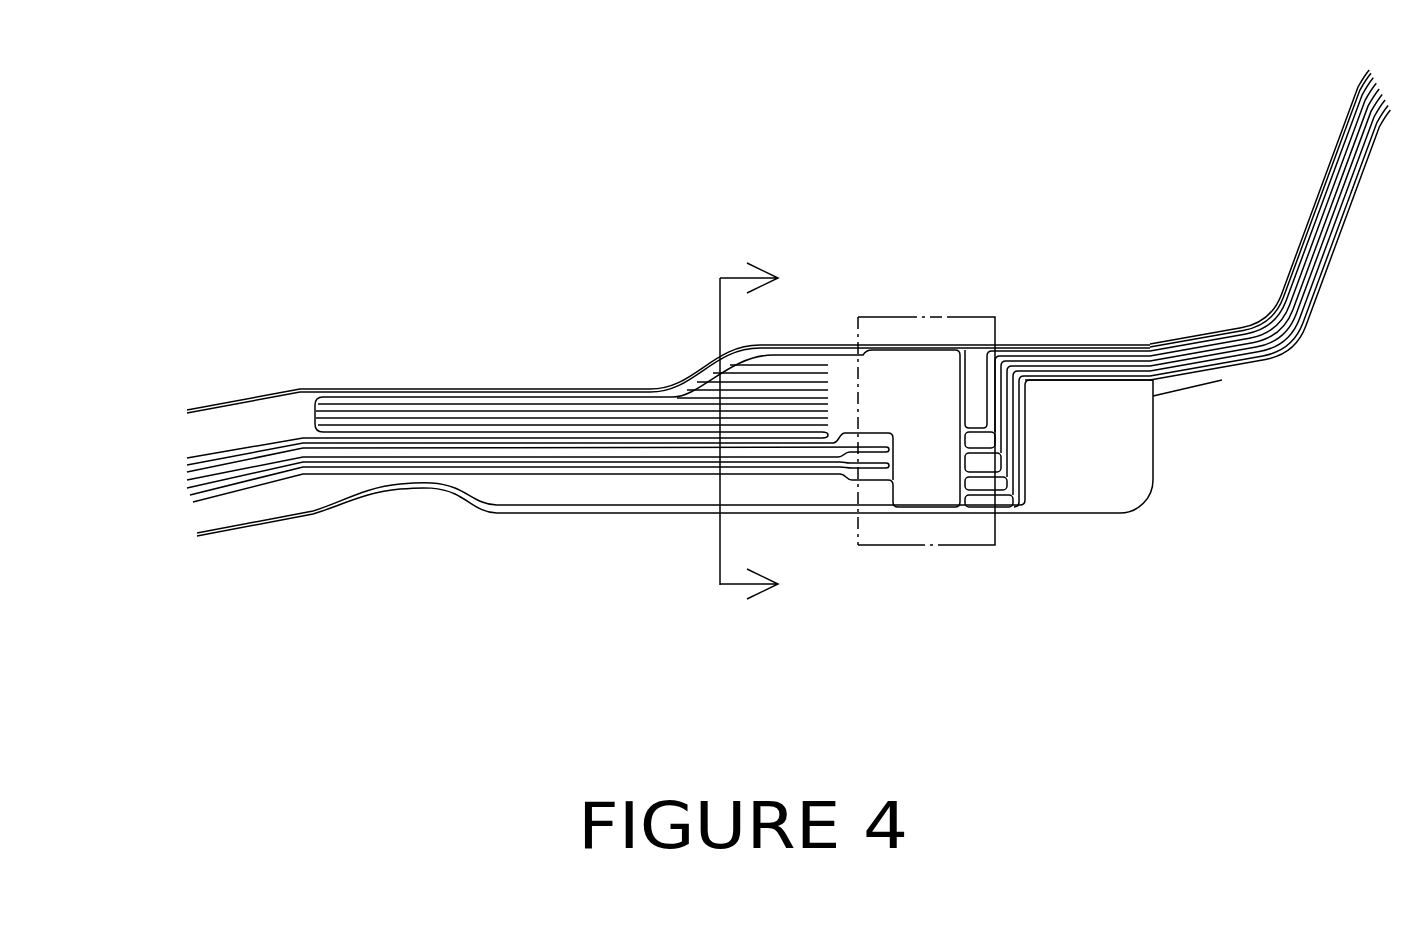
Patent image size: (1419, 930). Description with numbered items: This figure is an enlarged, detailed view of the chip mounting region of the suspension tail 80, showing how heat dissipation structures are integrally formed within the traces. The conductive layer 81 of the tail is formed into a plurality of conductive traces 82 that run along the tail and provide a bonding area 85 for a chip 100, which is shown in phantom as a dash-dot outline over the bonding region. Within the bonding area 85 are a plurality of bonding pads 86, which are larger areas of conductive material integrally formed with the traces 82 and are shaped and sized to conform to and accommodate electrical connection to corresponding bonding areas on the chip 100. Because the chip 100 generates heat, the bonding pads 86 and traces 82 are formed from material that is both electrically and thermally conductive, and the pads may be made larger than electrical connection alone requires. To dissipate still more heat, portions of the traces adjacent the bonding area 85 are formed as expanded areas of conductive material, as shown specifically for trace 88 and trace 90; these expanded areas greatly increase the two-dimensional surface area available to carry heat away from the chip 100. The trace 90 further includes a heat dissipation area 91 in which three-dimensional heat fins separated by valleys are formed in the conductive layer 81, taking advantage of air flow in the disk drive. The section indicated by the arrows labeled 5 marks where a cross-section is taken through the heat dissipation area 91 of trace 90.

The suspension tail 80 is at (1140, 505).
The conductive layer 81 is at (515, 498).
The conductive traces 82 is at (318, 453).
The bonding area 85 is at (871, 560).
The bonding pads 86 is at (877, 492).
The trace 88 is at (626, 487).
The trace 90 is at (842, 378).
The heat dissipation area 91 is at (707, 398).
The chip 100 is at (967, 317).
The section line 5- 5 is at (763, 431).